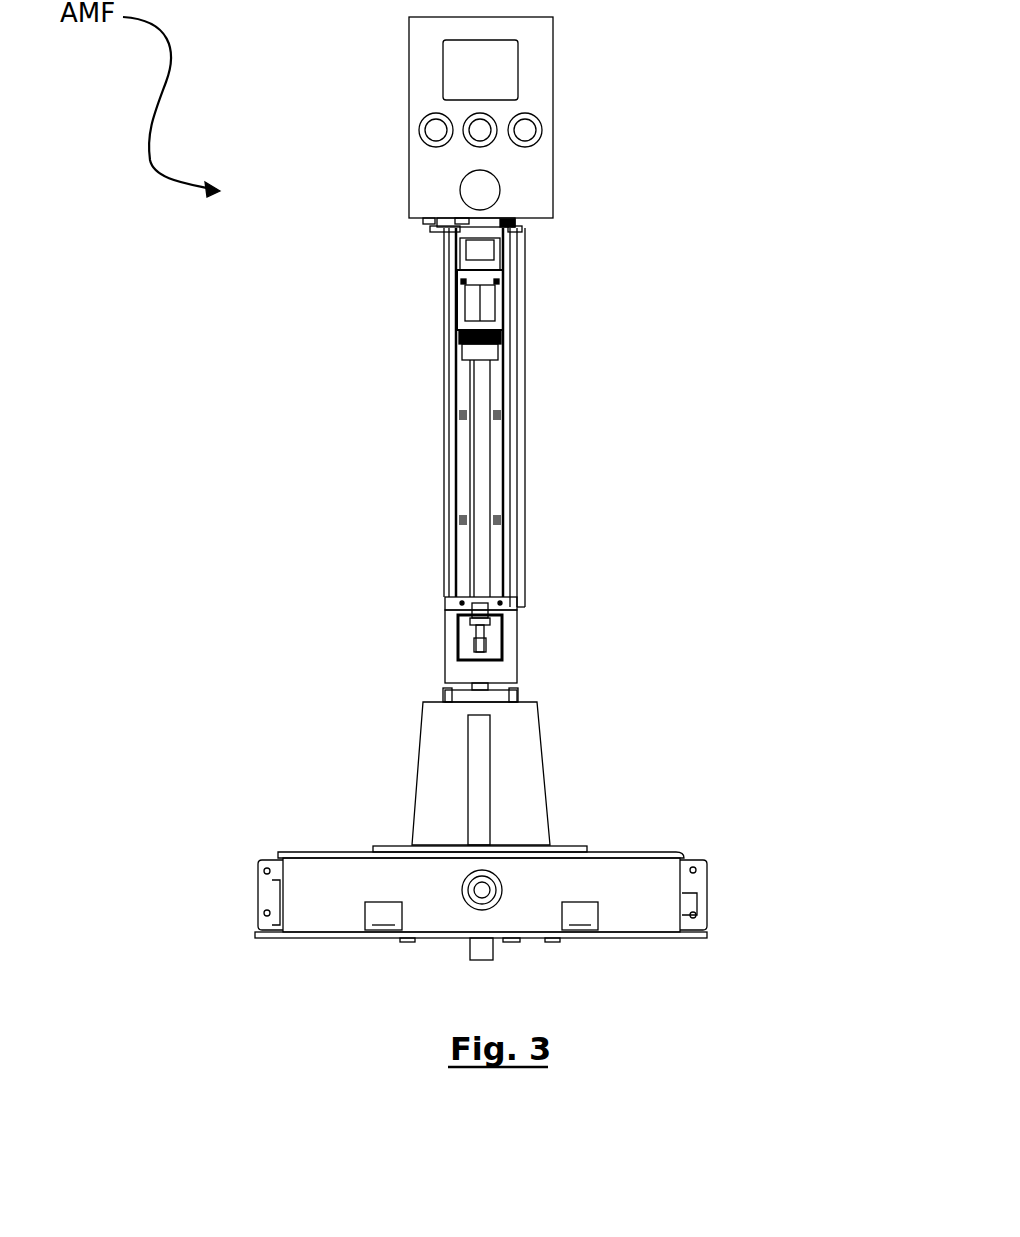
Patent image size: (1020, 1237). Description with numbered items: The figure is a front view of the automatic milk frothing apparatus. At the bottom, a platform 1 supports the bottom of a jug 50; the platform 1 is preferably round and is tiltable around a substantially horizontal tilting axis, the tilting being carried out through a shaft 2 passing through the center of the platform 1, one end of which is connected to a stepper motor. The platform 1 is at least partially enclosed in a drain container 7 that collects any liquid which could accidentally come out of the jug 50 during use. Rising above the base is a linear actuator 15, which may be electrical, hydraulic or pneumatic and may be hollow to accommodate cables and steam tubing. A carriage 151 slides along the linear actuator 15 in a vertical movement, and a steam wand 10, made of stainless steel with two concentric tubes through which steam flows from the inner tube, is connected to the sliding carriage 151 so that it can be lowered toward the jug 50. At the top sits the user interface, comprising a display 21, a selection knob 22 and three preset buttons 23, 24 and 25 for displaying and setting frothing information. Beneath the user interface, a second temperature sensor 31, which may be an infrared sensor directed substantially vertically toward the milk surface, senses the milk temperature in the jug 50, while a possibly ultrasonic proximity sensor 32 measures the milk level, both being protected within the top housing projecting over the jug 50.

The display 21 is at (520, 62).
The selection knob 22 is at (505, 190).
The preset button 23 is at (412, 132).
The preset button 24 is at (478, 144).
The preset button 25 is at (542, 138).
The second temperature sensor 31 is at (520, 232).
The proximity sensor 32 is at (440, 226).
The linear actuator 15 is at (445, 405).
The carriage 151 is at (460, 282).
The steam wand 10 is at (490, 495).
The jug 50 is at (382, 757).
The platform 1 is at (585, 842).
The drain container 7 is at (695, 884).
The shaft 2 is at (482, 890).